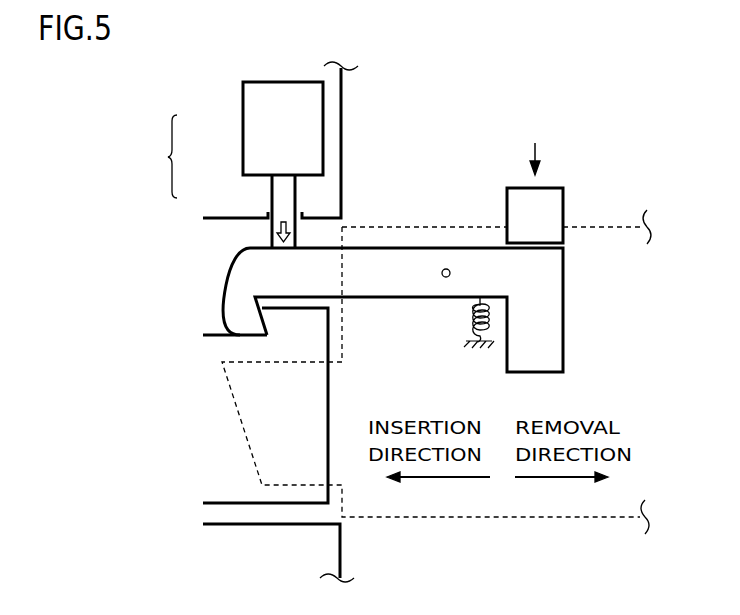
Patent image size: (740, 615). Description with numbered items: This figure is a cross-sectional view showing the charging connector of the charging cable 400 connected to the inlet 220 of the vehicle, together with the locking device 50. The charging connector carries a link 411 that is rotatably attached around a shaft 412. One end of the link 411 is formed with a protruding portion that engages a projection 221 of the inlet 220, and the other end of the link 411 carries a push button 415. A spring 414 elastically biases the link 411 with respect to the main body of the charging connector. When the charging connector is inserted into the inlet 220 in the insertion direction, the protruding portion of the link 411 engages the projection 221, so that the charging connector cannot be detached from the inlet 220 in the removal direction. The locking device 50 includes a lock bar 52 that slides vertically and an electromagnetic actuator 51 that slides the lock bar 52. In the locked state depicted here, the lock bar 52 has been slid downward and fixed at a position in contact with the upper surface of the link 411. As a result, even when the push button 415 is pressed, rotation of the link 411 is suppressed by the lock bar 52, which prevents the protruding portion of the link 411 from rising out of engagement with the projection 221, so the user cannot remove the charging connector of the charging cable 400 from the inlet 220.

The locking device 50 is at (159, 156).
The electromagnetic actuator 51 is at (243, 127).
The lock bar 52 is at (272, 206).
The link 411 is at (225, 290).
The shaft 412 is at (446, 268).
The spring 414 is at (470, 322).
The push button 415 is at (548, 188).
The projection 221 is at (275, 318).
The inlet 220 is at (253, 505).
The charging cable 400 is at (535, 520).